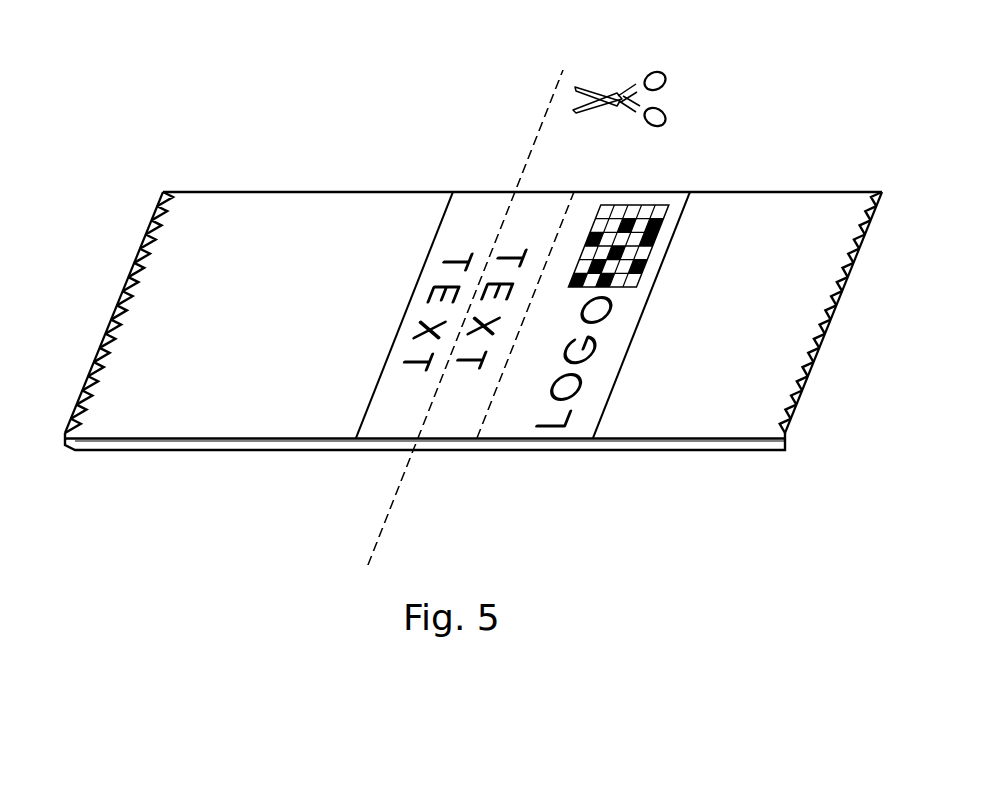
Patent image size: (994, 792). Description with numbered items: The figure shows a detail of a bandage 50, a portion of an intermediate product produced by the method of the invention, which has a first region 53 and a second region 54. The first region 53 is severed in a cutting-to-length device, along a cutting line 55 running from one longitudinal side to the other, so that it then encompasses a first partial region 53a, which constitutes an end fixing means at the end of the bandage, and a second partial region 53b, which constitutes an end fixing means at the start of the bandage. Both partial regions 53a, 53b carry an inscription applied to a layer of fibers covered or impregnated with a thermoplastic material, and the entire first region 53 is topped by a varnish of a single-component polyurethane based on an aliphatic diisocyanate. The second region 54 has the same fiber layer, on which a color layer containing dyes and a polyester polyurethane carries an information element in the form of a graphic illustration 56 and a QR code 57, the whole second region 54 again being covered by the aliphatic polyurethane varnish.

The bandage 50 is at (788, 153).
The first region 53 is at (502, 203).
The first partial region 53a is at (408, 390).
The second partial region 53b is at (457, 386).
The second region 54 is at (686, 193).
The cutting line 55 is at (563, 70).
The graphic illustration 56 is at (608, 353).
The QR code 57 is at (642, 252).